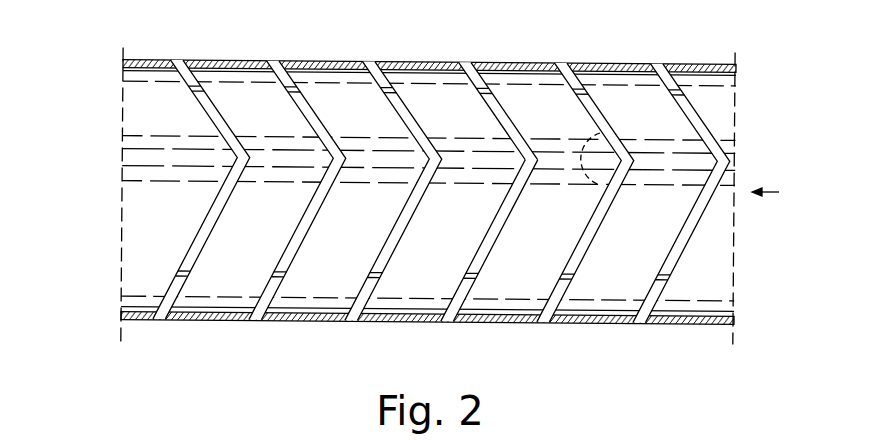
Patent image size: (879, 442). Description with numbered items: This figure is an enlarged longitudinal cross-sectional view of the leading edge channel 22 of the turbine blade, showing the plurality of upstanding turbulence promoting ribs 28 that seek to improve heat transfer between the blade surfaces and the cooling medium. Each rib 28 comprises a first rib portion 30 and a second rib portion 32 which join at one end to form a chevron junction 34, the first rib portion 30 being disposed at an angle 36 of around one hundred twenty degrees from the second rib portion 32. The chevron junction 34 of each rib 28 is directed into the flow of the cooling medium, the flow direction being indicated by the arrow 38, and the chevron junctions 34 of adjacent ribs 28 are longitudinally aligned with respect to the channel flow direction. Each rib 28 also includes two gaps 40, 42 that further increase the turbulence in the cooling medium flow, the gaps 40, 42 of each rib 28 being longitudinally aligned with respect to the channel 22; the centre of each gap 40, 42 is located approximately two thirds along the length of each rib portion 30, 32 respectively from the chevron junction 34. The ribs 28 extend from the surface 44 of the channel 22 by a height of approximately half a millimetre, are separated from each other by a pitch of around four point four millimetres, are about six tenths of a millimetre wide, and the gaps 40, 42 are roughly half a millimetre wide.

The leading edge channel 22 is at (92, 297).
The rib 28 is at (402, 121).
The first rib portion 30 is at (502, 117).
The second rib portion 32 is at (497, 238).
The chevron junction 34 is at (632, 150).
The angle 36 is at (600, 190).
The arrow 38 is at (779, 192).
The gap 40 is at (287, 86).
The gap 42 is at (280, 276).
The surface 44 is at (137, 204).